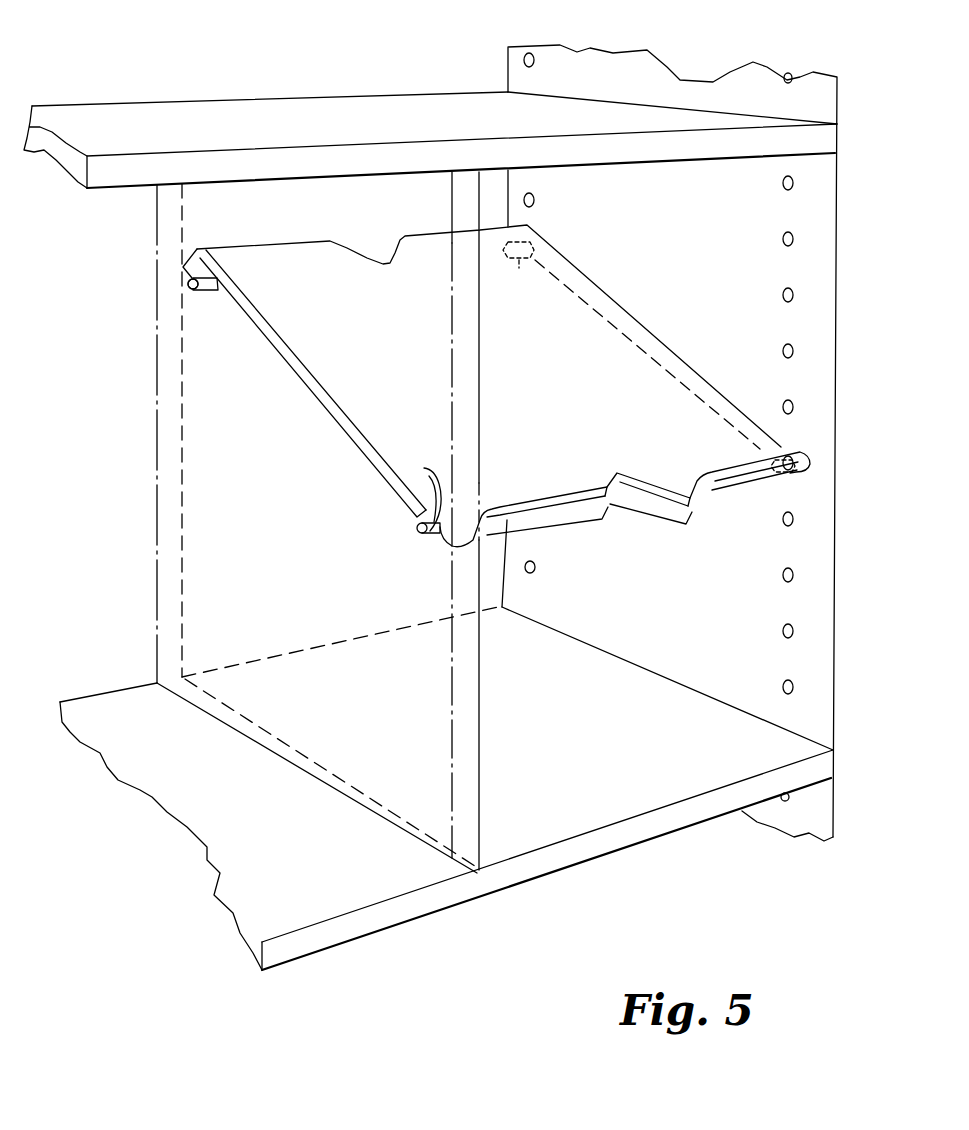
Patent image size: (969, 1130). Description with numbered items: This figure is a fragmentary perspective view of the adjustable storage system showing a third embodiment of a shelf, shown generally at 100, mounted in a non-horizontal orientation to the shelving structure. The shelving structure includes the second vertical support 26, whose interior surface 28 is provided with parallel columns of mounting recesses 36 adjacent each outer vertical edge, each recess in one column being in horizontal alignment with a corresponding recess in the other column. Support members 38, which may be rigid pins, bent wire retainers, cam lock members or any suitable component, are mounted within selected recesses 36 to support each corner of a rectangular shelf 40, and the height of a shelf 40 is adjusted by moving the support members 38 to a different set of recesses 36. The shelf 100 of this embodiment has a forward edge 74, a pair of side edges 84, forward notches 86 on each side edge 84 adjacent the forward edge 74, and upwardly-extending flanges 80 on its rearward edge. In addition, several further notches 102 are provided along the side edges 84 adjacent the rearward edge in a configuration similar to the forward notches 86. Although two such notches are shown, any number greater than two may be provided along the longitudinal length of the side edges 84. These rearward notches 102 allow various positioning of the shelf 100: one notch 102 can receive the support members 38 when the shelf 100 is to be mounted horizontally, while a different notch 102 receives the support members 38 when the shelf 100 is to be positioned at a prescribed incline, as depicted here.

The second vertical support 26 is at (652, 424).
The interior surface 28 is at (590, 66).
The mounting recesses 36 is at (781, 632).
The support members 38 is at (193, 290).
The shelf 40 is at (393, 115).
The forward edge 74 is at (482, 359).
The upwardly-extending flanges 80 is at (562, 505).
The side edges 84 is at (345, 418).
The forward notches 86 is at (218, 283).
The shelf (third embodiment) 100 is at (491, 405).
The additional notches 102 is at (842, 415).